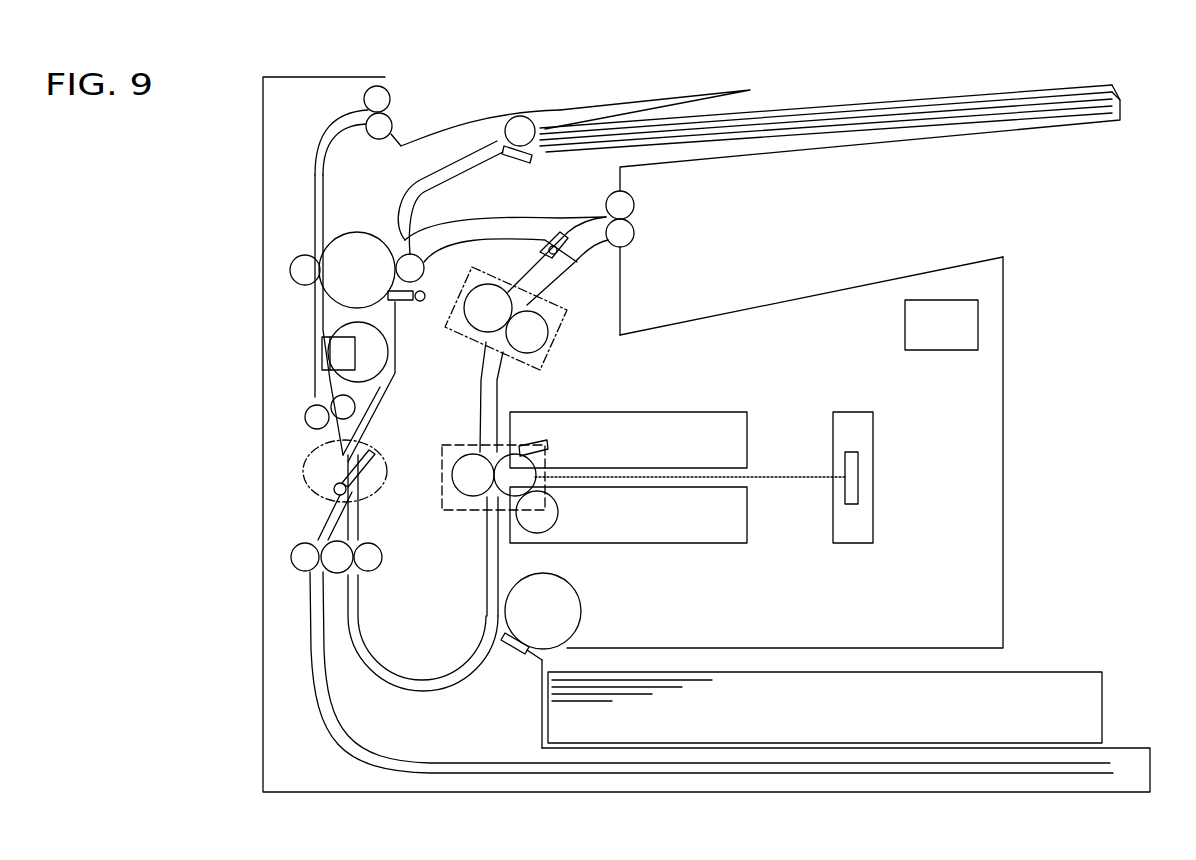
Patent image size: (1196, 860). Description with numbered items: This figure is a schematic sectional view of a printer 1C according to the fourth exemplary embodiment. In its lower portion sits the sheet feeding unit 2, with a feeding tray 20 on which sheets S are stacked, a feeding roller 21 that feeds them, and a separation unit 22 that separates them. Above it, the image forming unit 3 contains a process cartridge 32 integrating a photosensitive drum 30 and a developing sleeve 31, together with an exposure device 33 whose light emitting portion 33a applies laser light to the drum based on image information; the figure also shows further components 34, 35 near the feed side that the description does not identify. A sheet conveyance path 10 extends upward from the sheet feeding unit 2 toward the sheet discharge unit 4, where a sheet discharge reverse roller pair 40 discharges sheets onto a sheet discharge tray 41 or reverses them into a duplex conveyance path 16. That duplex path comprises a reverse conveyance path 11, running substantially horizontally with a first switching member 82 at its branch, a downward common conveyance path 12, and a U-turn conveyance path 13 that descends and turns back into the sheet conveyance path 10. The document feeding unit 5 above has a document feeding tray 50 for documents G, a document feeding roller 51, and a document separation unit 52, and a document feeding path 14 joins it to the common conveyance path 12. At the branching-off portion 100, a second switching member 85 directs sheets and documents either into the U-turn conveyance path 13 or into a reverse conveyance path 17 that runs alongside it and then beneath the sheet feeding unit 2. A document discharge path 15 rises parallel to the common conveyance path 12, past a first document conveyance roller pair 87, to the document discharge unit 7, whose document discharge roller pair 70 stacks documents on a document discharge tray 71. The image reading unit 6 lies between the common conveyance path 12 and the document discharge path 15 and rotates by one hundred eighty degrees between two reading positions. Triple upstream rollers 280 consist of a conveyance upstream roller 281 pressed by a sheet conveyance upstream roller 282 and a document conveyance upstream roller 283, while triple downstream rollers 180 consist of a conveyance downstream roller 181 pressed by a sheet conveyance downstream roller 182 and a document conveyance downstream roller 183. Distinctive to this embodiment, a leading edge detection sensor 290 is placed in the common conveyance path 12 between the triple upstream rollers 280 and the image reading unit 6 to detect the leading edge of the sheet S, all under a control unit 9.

The printer 1C is at (843, 74).
The sheet feeding unit 2 is at (828, 668).
The image forming unit 3 is at (773, 388).
The sheet discharge unit 4 is at (750, 224).
The document feeding unit 5 is at (762, 99).
The image reading unit 6 is at (330, 341).
The document discharge unit 7 is at (469, 73).
The control unit 9 is at (949, 351).
The sheet conveyance path 10 is at (481, 420).
The reverse conveyance path 11 is at (446, 230).
The common conveyance path 12 is at (380, 418).
The U-turn conveyance path 13 is at (360, 595).
The document feeding path 14 is at (411, 188).
The document discharge path 15 is at (313, 176).
The duplex conveyance path 16 is at (414, 696).
The reverse conveyance path 17 is at (320, 516).
The feeding tray 20 is at (541, 721).
The feeding roller 21 is at (582, 604).
The separation unit 22 is at (515, 661).
The photosensitive drum 30 is at (540, 472).
The developing sleeve 31 is at (559, 512).
The process cartridge 32 is at (722, 412).
The exposure device 33 is at (874, 451).
The light emitting portion 33a is at (860, 490).
The registration roller 34 is at (475, 492).
The conveying roller pair 35 is at (556, 352).
The sheet discharge reverse roller pair 40 is at (636, 232).
The sheet discharge tray 41 is at (752, 308).
The document feeding tray 50 is at (1121, 102).
The document feeding roller 51 is at (521, 116).
The document separation unit 52 is at (522, 163).
The document discharge roller pair 70 is at (364, 104).
The document discharge tray 71 is at (450, 124).
The first switching member 82 is at (561, 252).
The second switching member 85 is at (340, 470).
The first document conveyance roller pair 87 is at (310, 410).
The branching-off portion 100 is at (318, 472).
The triple downstream rollers 180 is at (213, 556).
The conveyance downstream roller 181 is at (340, 574).
The sheet conveyance downstream roller 182 is at (368, 572).
The document conveyance downstream roller 183 is at (293, 558).
The triple upstream rollers 280 is at (213, 188).
The conveyance upstream roller 281 is at (338, 236).
The sheet conveyance upstream roller 282 is at (335, 214).
The document conveyance upstream roller 283 is at (290, 268).
The leading edge detection sensor 290 is at (423, 302).
The document G is at (933, 102).
The sheet S is at (1062, 672).